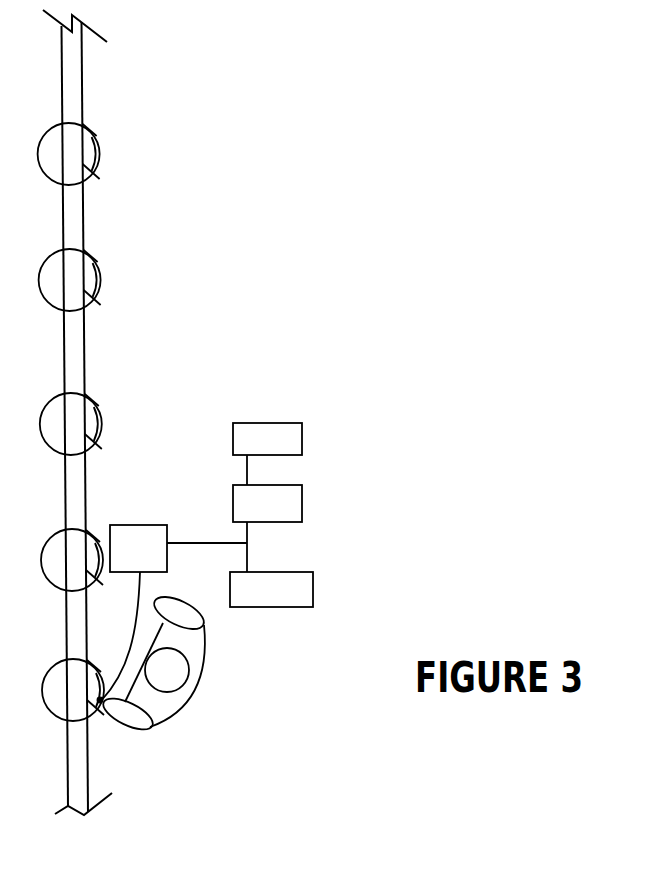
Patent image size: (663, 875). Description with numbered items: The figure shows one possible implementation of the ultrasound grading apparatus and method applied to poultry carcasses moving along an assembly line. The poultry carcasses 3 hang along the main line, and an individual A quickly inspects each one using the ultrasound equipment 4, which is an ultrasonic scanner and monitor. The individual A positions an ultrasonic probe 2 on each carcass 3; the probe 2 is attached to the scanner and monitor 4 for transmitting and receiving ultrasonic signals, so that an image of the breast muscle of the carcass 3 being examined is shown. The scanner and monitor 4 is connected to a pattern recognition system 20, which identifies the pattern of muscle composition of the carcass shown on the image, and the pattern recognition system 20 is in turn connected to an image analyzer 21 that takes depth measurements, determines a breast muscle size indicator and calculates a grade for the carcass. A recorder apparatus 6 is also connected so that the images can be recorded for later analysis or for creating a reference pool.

The ultrasonic probe 2 is at (102, 702).
The poultry carcass 3 is at (63, 710).
The ultrasonic scanner and monitor 4 is at (147, 532).
The recorder apparatus 6 is at (305, 592).
The pattern recognition system 20 is at (292, 503).
The image analyzer 21 is at (292, 441).
The individual A is at (192, 697).